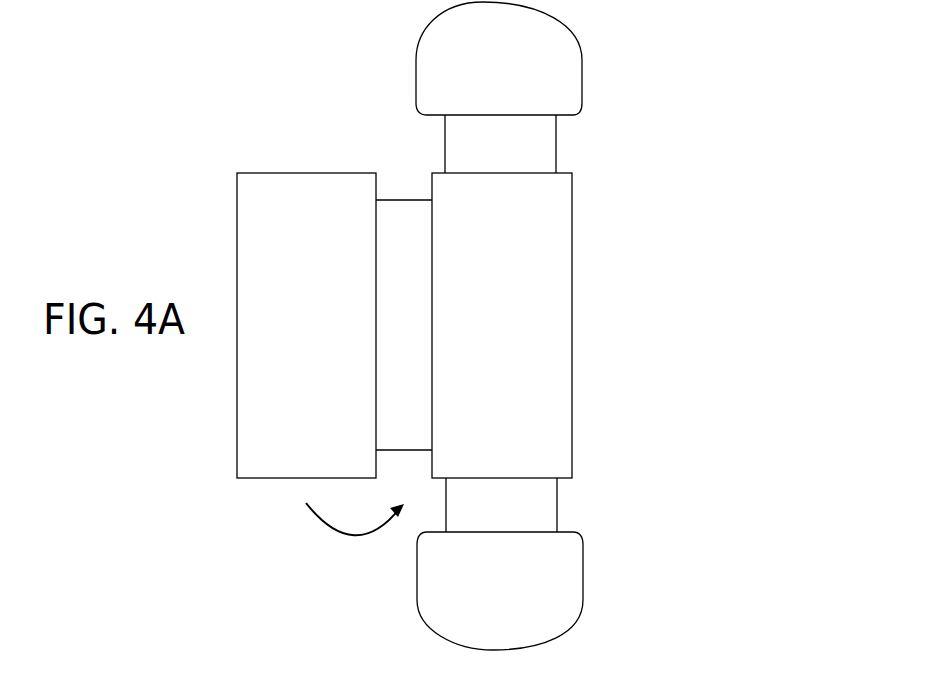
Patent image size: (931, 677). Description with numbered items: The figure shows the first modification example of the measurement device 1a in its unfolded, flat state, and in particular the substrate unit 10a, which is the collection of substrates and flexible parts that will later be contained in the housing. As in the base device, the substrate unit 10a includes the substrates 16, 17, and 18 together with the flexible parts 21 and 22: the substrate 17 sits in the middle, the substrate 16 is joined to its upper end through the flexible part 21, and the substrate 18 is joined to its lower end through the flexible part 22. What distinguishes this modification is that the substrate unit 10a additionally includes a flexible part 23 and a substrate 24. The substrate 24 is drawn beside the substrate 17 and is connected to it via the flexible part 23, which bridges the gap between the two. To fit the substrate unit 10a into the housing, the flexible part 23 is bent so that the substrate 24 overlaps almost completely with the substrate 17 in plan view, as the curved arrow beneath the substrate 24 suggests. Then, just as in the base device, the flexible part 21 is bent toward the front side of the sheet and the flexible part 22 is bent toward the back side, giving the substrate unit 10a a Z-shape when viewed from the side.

The measurement device 1a is at (752, 93).
The substrate unit 10a is at (412, 44).
The substrate 16 is at (545, 67).
The substrate 17 is at (557, 290).
The substrate 18 is at (555, 597).
The flexible part 21 is at (545, 150).
The flexible part 22 is at (540, 512).
The flexible part 23 is at (386, 210).
The substrate 24 is at (278, 190).